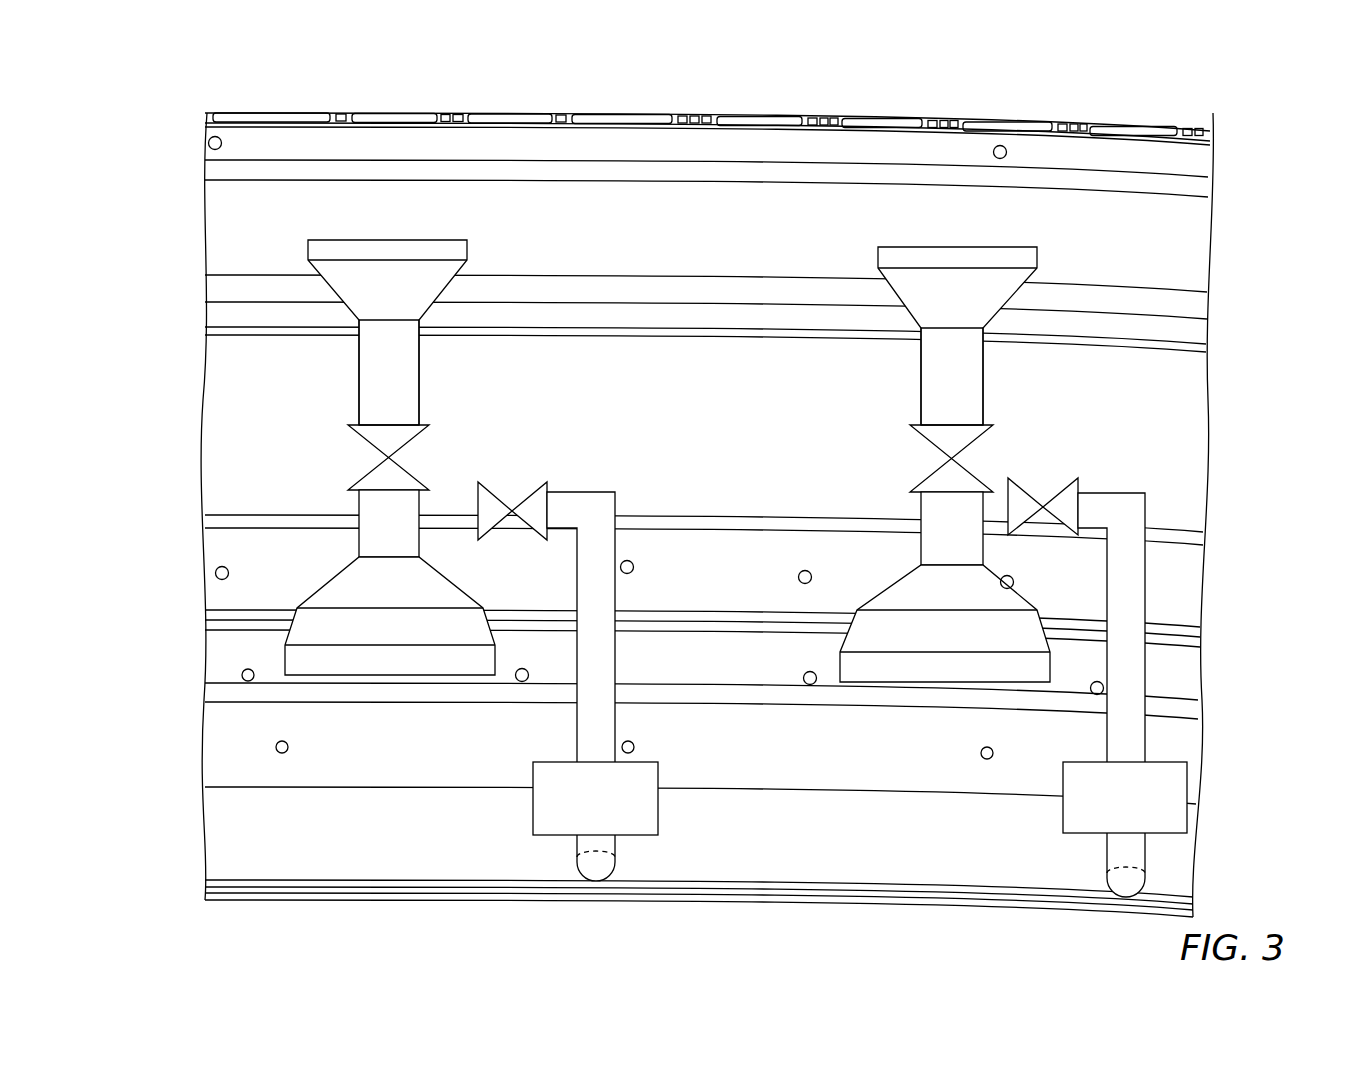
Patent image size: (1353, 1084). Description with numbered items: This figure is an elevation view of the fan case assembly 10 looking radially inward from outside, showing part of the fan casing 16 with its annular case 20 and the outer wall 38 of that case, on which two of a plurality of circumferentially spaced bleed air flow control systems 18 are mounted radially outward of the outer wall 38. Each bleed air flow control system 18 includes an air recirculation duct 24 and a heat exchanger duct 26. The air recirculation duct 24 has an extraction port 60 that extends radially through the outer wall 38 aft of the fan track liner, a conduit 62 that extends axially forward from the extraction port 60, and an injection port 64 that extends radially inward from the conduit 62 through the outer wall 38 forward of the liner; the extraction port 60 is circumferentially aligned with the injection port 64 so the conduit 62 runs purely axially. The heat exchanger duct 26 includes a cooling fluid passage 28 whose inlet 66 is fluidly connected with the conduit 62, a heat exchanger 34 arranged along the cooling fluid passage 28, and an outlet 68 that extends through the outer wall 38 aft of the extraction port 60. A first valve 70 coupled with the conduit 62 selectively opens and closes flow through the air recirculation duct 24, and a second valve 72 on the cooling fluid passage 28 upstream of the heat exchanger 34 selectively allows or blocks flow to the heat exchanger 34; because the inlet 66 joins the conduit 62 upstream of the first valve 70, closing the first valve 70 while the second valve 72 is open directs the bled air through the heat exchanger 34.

The fan case assembly 10 is at (163, 158).
The fan casing 16 is at (372, 105).
The bleed air flow control system 18 is at (550, 227).
The annular case 20 is at (767, 162).
The air recirculation duct 24 is at (587, 390).
The heat exchanger duct 26 is at (934, 723).
The cooling fluid passage 28 is at (617, 672).
The heat exchanger 34 is at (660, 812).
The outer wall 38 is at (260, 430).
The extraction port 60 is at (382, 692).
The conduit 62 is at (427, 393).
The injection port 64 is at (437, 232).
The inlet 66 is at (420, 510).
The outlet 68 is at (596, 870).
The first valve 70 is at (348, 453).
The second valve 72 is at (547, 480).